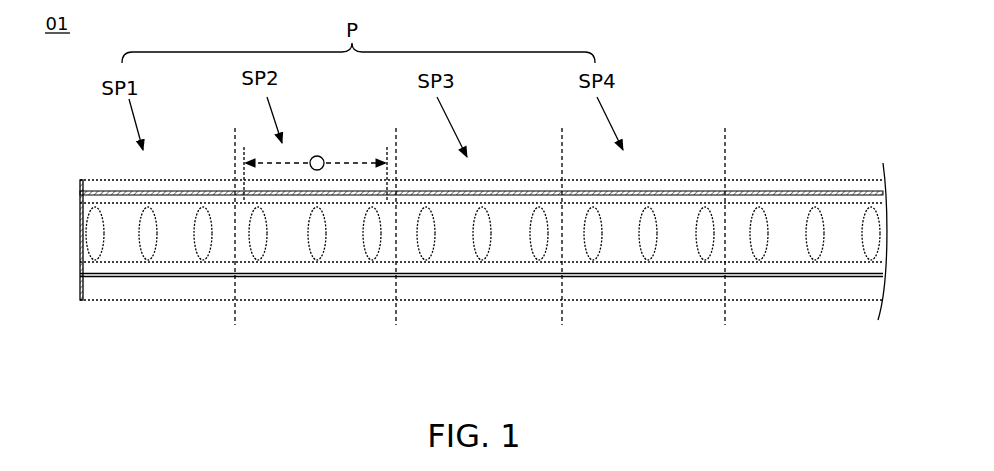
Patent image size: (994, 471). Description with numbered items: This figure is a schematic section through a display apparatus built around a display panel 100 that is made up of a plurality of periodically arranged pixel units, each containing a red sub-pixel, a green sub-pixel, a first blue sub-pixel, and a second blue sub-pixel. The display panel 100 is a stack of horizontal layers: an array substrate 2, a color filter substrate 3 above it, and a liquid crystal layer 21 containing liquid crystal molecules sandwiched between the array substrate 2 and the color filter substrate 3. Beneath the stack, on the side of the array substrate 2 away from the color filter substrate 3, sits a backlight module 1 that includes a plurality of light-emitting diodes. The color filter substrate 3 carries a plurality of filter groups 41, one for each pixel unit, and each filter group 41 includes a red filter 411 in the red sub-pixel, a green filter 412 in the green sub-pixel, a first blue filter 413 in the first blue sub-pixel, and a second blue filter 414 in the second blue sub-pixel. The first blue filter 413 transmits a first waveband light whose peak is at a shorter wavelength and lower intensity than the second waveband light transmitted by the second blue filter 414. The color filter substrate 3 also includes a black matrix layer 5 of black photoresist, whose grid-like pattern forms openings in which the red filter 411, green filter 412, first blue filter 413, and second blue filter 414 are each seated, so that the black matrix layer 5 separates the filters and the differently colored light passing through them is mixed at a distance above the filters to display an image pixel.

The display panel 100 is at (72, 180).
The color filter substrate 3 is at (118, 192).
The black matrix layer 5 is at (232, 200).
The red filter 411 is at (170, 197).
The green filter 412 is at (293, 198).
The first blue filter 413 is at (451, 197).
The second blue filter 414 is at (625, 197).
The filter group 41 is at (175, 360).
The array substrate 2 is at (765, 268).
The backlight module 1 is at (793, 285).
The liquid crystal layer 21 is at (886, 205).